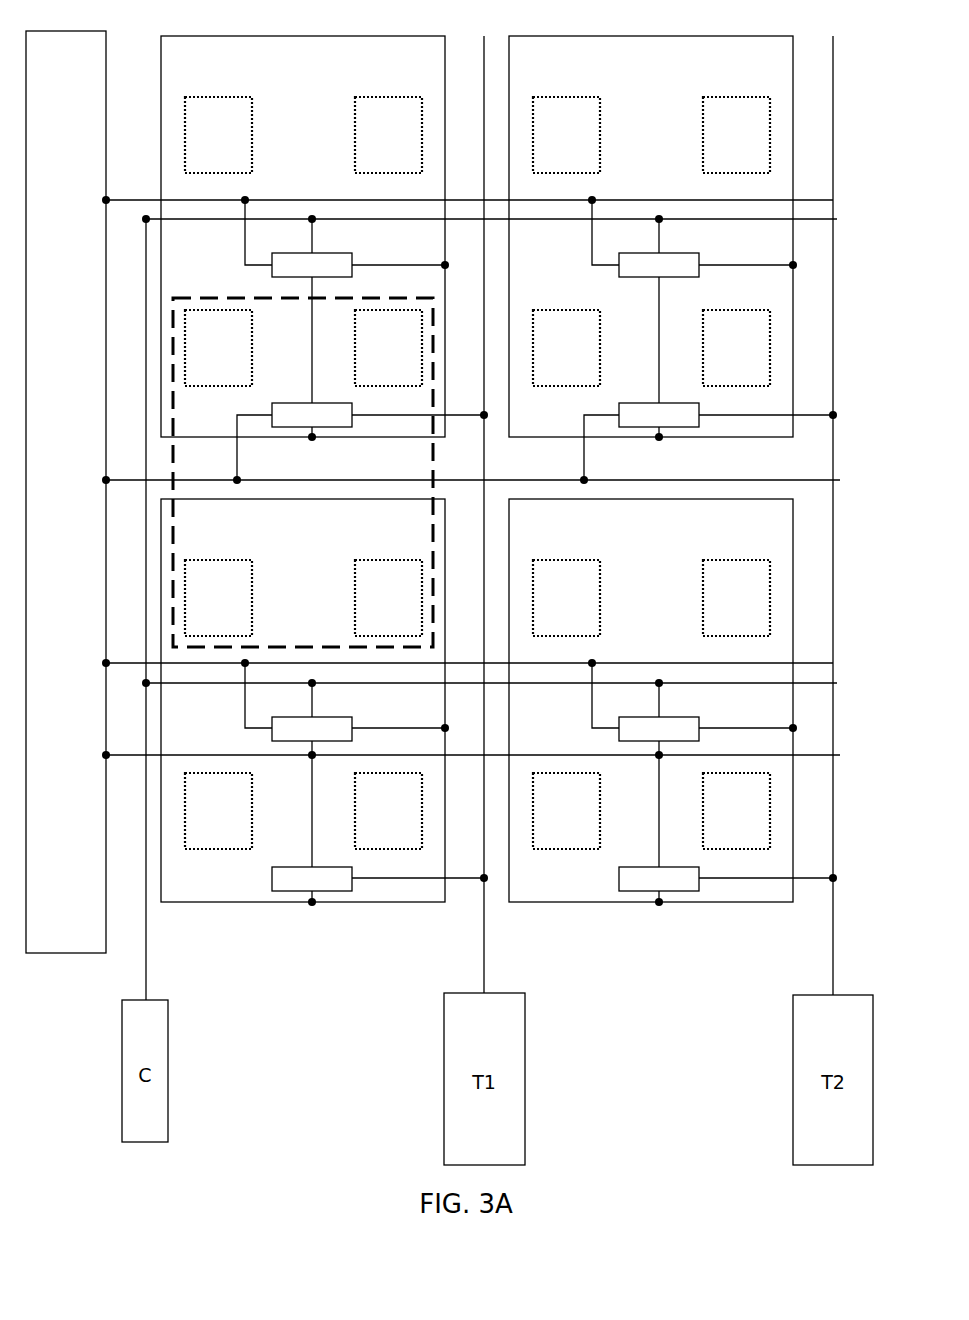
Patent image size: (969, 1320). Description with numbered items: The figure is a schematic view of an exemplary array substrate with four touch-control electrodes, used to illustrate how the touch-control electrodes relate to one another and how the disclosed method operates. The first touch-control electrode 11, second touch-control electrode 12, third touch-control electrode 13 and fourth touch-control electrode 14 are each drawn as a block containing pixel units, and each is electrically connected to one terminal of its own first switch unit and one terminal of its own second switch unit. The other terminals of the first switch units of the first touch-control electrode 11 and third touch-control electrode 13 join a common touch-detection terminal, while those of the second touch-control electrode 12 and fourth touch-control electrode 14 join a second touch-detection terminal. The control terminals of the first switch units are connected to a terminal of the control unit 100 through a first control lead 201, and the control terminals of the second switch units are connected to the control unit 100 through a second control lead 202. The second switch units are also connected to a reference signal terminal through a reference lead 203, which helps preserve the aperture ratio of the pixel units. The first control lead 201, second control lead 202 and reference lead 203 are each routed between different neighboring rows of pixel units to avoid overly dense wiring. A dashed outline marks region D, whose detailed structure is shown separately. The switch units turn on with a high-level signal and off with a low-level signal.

The control unit 100 is at (57, 943).
The first touch-control electrode 11 is at (433, 63).
The second touch-control electrode 12 is at (778, 73).
The third touch-control electrode 13 is at (432, 653).
The fourth touch-control electrode 14 is at (780, 555).
The region D is at (433, 365).
The first control lead 201 is at (807, 480).
The second control lead 202 is at (807, 200).
The reference lead 203 is at (820, 220).